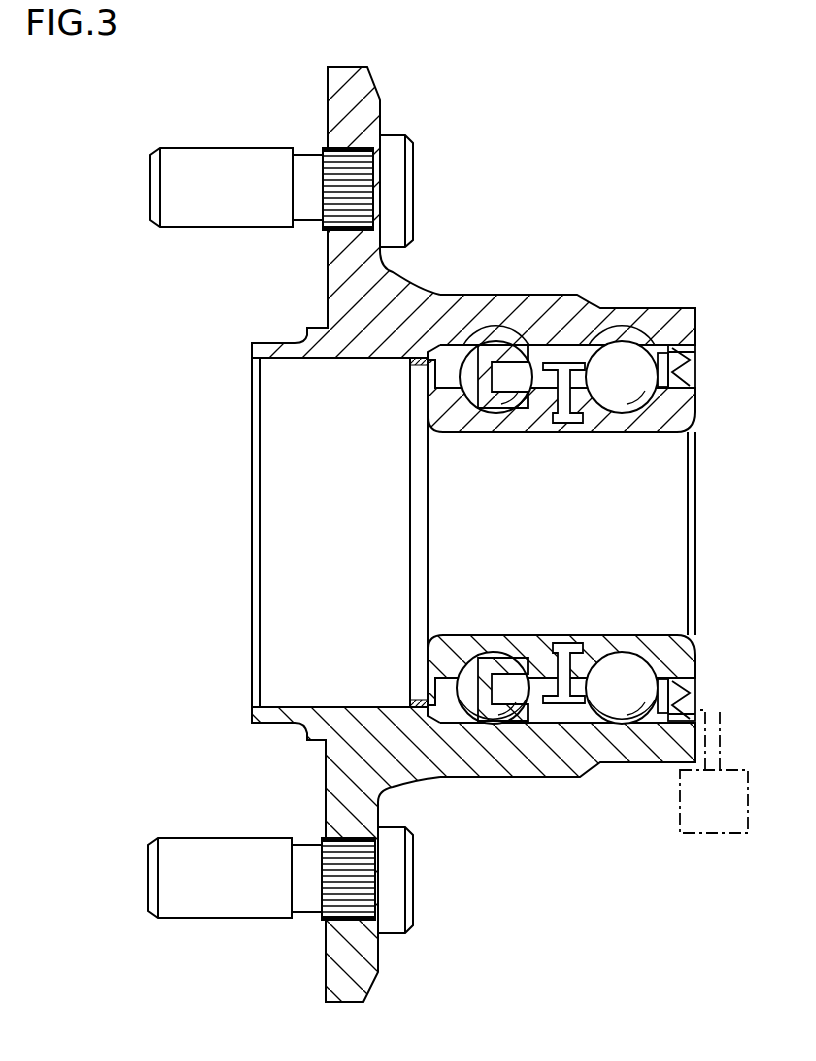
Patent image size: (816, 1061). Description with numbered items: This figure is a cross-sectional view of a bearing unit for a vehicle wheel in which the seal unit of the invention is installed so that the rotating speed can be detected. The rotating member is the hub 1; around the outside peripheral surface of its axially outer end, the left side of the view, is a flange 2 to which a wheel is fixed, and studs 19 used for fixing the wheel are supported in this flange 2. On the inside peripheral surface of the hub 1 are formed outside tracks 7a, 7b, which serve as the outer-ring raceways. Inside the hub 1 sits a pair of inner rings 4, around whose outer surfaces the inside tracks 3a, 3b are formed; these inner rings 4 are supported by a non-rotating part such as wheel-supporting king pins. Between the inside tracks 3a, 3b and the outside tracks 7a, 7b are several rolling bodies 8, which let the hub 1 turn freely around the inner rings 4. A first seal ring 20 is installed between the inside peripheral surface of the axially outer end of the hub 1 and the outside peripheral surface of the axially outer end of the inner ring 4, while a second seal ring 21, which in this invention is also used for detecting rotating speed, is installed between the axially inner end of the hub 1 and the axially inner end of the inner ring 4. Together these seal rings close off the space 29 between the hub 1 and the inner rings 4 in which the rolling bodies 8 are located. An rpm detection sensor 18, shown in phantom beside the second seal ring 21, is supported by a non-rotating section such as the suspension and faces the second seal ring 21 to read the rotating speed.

The hub 1 is at (577, 295).
The flange 2 is at (372, 110).
The inside track 3a is at (470, 343).
The inside track 3b is at (628, 400).
The inner ring 4 is at (695, 403).
The outside track 7a is at (500, 717).
The outside track 7b is at (608, 713).
The rolling body 8 is at (510, 325).
The rpm detection sensor 18 is at (712, 837).
The stud 19 is at (245, 170).
The first seal ring 20 is at (420, 363).
The second seal ring 21 is at (698, 358).
The space 29 is at (557, 710).